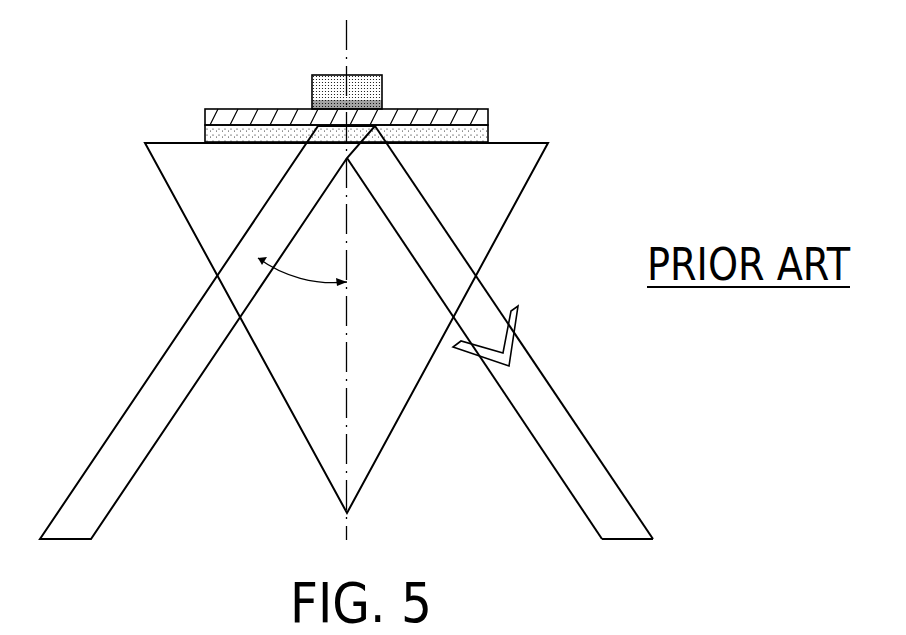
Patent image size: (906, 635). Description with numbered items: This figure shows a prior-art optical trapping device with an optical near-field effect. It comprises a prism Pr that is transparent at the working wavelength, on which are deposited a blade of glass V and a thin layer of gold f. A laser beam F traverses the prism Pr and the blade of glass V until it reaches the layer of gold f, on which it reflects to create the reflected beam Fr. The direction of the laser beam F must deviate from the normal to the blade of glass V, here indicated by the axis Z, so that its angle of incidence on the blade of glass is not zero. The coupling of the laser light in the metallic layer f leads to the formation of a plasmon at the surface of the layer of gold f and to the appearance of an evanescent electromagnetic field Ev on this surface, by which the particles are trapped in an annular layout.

The optical axis / normal direction Z is at (335, 270).
The prism Pr is at (492, 207).
The laser beam F is at (142, 415).
The reflected beam Fr is at (540, 402).
The blade of glass V is at (484, 137).
The thin layer of gold f is at (465, 117).
The evanescent electromagnetic field Ev is at (372, 97).